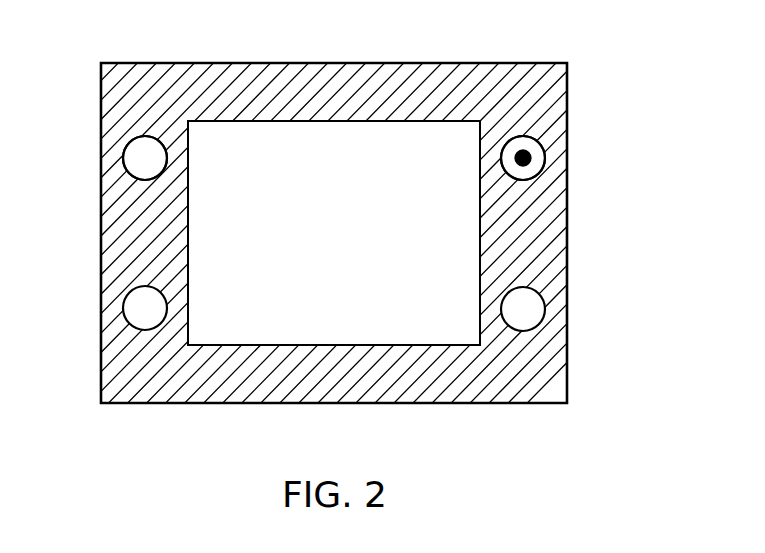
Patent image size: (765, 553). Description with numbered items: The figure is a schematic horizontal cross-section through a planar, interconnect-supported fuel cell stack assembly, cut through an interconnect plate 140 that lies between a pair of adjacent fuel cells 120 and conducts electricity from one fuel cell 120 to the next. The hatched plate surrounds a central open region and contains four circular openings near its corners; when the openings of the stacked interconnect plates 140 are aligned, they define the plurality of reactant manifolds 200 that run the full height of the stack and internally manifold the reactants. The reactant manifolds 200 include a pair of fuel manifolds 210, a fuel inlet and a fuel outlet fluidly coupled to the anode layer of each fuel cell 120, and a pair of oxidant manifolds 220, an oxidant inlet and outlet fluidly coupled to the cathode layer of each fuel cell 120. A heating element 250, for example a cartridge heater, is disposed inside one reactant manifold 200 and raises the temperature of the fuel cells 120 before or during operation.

The interconnect plate 140 is at (355, 62).
The fuel cell 120 is at (218, 246).
The reactant manifolds 200 is at (502, 149).
The heating element 250 is at (531, 155).
The oxidant manifolds 220 is at (166, 162).
The fuel manifolds 210 is at (483, 313).